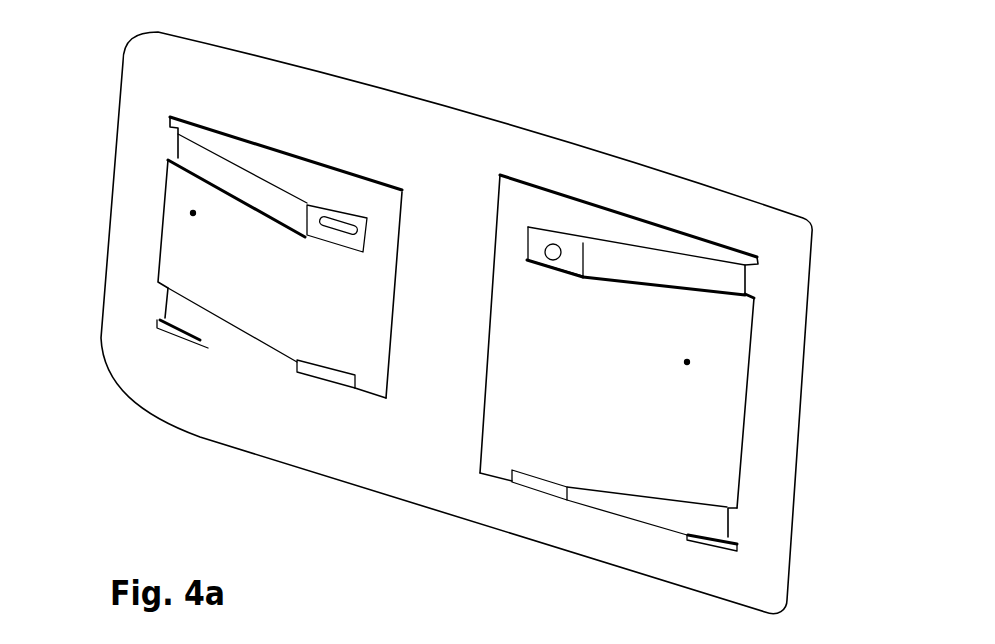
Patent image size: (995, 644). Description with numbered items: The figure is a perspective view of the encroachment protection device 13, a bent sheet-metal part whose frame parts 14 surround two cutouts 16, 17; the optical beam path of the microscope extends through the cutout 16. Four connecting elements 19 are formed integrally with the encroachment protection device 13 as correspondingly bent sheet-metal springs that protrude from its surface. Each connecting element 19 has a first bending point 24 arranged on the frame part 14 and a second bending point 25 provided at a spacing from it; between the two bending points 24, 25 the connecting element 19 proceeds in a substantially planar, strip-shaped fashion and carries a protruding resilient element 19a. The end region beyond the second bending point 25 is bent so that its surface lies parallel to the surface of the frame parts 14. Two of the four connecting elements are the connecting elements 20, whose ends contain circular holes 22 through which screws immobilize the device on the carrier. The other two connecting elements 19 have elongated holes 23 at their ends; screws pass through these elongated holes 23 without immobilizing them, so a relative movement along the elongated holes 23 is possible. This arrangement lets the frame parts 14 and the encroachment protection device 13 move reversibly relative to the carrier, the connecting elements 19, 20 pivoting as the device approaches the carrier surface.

The encroachment protection device 13 is at (560, 118).
The frame part 14 is at (492, 135).
The cutout 16 is at (687, 362).
The cutout 17 is at (193, 213).
The connecting element 19 is at (240, 178).
The protruding resilient element 19a is at (257, 212).
The connecting element 20 is at (687, 268).
The circular hole 22 is at (553, 260).
The elongated hole 23 is at (332, 230).
The first bending point 24 is at (172, 141).
The second bending point 25 is at (308, 205).